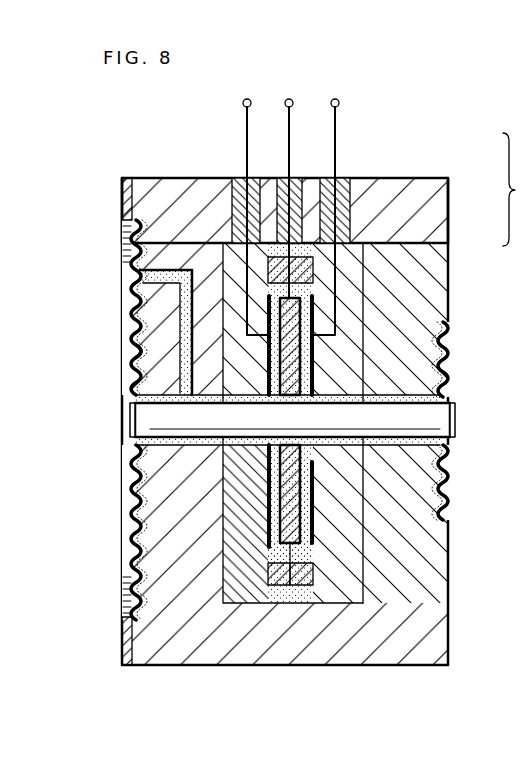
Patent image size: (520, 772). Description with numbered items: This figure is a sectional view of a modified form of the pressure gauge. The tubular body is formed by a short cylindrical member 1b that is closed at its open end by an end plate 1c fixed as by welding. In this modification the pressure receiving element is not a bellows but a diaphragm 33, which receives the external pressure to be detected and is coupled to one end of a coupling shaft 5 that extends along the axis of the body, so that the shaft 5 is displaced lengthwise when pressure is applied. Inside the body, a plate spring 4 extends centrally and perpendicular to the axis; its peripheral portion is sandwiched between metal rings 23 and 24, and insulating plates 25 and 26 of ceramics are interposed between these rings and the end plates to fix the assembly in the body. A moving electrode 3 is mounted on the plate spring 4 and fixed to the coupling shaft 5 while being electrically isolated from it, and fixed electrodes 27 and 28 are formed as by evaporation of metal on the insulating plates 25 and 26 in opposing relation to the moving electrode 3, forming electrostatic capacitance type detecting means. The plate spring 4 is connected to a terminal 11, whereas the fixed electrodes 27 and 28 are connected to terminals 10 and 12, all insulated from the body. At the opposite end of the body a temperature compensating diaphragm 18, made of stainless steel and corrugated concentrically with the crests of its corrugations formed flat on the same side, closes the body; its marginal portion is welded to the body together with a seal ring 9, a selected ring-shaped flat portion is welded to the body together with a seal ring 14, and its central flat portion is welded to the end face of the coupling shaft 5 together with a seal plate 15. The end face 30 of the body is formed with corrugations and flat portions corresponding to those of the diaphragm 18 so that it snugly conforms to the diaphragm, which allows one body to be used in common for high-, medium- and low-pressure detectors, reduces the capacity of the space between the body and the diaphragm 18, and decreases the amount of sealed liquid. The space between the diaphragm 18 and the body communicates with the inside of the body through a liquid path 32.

The cylindrical member 1b is at (432, 178).
The end plate 1c is at (437, 278).
The moving electrode 3 is at (313, 510).
The plate spring 4 is at (315, 557).
The coupling shaft 5 is at (456, 428).
The seal ring 9 is at (121, 202).
The terminal 10 is at (250, 99).
The terminal 11 is at (291, 99).
The terminal 12 is at (338, 99).
The seal ring 14 is at (133, 351).
The seal plate 15 is at (130, 428).
The temperature compensating diaphragm 18 is at (134, 262).
The metal ring 23 is at (280, 592).
The metal ring 24 is at (303, 590).
The insulating plate 25 is at (246, 590).
The insulating plate 26 is at (342, 585).
The fixed electrode 27 is at (232, 521).
The fixed electrode 28 is at (313, 540).
The end face of the body 30 is at (283, 513).
The liquid path 32 is at (178, 296).
The diaphragm 33 is at (449, 358).